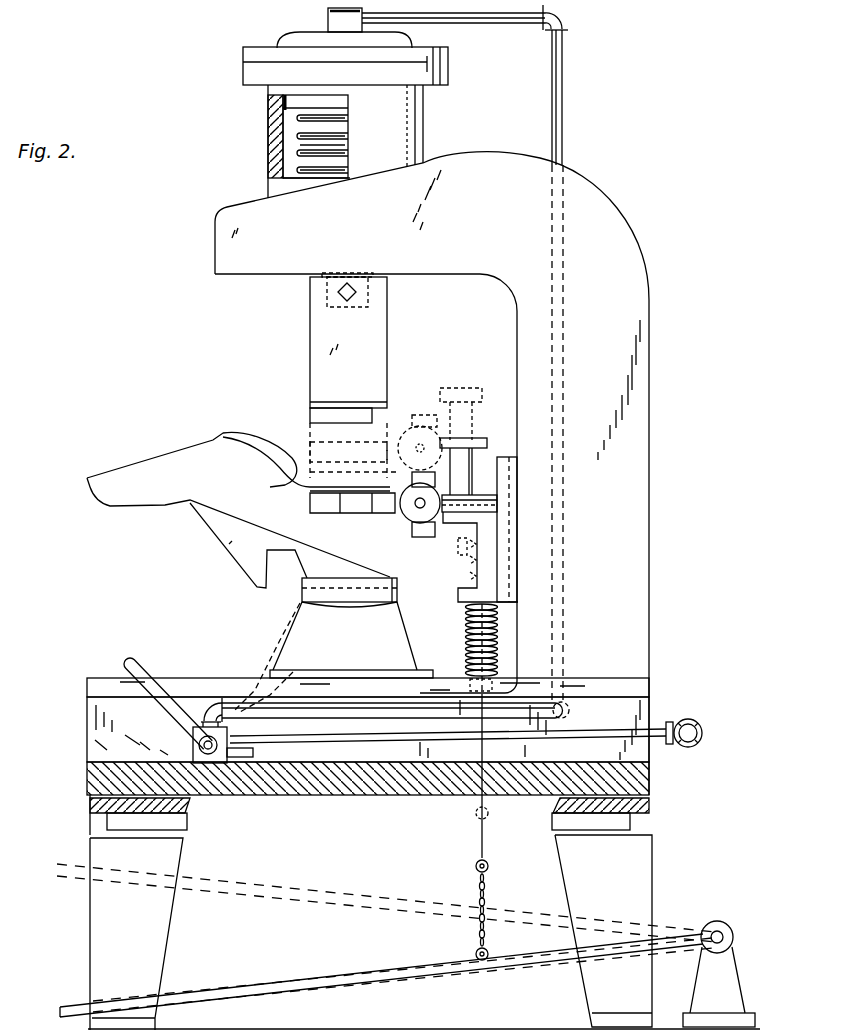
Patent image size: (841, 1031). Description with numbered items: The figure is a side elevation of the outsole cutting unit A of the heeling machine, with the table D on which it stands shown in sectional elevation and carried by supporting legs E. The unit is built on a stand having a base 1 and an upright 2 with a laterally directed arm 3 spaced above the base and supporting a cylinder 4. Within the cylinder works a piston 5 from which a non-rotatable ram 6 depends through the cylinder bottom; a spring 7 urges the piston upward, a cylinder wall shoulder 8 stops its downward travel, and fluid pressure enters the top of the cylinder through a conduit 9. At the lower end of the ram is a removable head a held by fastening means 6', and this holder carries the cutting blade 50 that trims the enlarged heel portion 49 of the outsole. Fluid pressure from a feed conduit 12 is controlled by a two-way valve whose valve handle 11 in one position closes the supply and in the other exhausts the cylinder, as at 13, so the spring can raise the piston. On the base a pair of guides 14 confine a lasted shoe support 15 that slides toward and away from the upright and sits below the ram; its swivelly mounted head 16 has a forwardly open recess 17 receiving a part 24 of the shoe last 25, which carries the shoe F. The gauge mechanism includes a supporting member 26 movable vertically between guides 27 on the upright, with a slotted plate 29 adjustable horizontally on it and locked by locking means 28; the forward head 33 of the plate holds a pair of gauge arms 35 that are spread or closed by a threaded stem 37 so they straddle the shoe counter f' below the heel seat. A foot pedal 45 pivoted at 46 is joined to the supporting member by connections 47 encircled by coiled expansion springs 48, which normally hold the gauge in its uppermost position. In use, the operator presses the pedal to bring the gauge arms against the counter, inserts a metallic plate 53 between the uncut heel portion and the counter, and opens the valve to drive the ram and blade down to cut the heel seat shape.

The outsole cutting unit A is at (652, 407).
The base 1 is at (92, 728).
The upright 2 is at (640, 479).
The laterally directed arm 3 is at (245, 266).
The cylinder 4 is at (408, 116).
The piston 5 is at (281, 100).
The ram 6 is at (290, 144).
The spring 7 is at (300, 147).
The cylinder wall shoulder 8 is at (292, 175).
The conduit 9 is at (558, 81).
The removable head a is at (312, 342).
The fastening means 6' is at (340, 275).
The cutting blade 50 is at (312, 419).
The shoe F is at (238, 510).
The gauge arms 35 is at (313, 503).
The metallic plate 53 is at (345, 492).
The heel portion of the outsole 49 is at (373, 493).
The shoe last 25 is at (233, 540).
The shoe counter f' is at (411, 512).
The stem 37 is at (416, 507).
The head 33 is at (428, 537).
The locking means 28 is at (465, 466).
The plate 29 is at (508, 503).
The guides 27 is at (507, 536).
The supporting member 26 is at (463, 555).
The coiled expansion spring 48 is at (466, 631).
The part of shoe last 24 is at (349, 580).
The swivelly mounted head 16 is at (305, 597).
The recess 17 is at (341, 603).
The lasted shoe support 15 is at (300, 633).
The guides 14 is at (198, 683).
The table D is at (97, 780).
The supporting legs E is at (95, 820).
The valve handle 11 is at (138, 675).
The exhaust 13 is at (253, 754).
The feed conduit 12 is at (688, 721).
The connections 47 is at (480, 844).
The foot pedal 45 is at (380, 912).
The pivot 46 is at (717, 931).